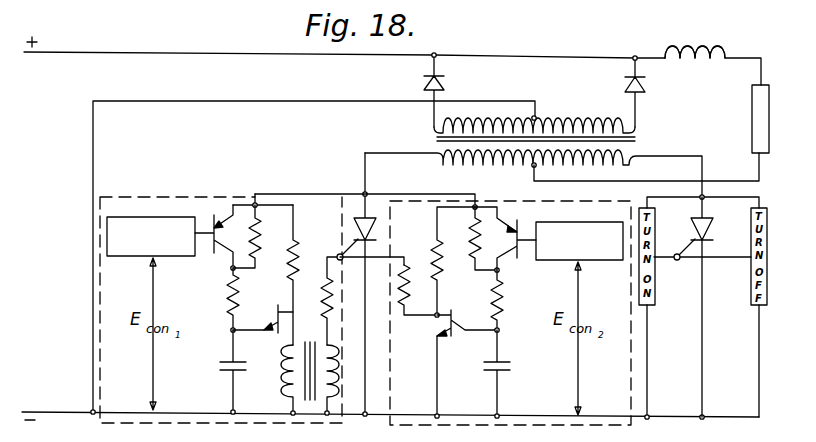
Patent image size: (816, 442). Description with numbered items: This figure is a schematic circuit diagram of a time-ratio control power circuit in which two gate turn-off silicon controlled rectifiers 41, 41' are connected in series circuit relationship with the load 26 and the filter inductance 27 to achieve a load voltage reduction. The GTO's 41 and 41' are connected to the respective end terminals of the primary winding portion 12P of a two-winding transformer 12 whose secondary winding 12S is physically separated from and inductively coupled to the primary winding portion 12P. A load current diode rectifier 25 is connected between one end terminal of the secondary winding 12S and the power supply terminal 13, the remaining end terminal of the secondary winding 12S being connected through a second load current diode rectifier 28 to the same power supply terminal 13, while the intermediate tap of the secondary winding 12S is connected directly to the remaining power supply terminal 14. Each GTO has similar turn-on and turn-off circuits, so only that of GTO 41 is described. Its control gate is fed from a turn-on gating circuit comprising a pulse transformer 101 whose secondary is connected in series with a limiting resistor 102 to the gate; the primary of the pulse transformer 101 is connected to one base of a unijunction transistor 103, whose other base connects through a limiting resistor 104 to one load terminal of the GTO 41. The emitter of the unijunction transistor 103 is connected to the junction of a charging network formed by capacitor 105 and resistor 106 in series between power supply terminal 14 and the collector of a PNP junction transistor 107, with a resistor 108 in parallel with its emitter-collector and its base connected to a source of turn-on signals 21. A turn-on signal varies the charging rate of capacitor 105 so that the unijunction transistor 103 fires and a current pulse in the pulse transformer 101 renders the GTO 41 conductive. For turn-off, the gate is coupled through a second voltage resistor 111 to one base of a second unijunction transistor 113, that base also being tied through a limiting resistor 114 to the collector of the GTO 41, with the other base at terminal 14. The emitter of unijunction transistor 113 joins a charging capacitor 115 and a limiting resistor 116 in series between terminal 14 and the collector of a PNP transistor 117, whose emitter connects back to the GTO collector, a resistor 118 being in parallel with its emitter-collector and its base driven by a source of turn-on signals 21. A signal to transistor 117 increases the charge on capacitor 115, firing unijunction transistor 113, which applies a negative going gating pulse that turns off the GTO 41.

The power supply terminal 13 is at (125, 52).
The remaining power supply terminal 14 is at (62, 415).
The two-winding transformer 12 is at (664, 144).
The secondary winding 12S is at (554, 121).
The primary winding portion 12P is at (512, 163).
The load current diode rectifier 25 is at (624, 85).
The second load current diode rectifier 28 is at (446, 83).
The filter inductance 27 is at (694, 68).
The load 26 is at (752, 113).
The source of turn-on signals 21 is at (152, 218).
The gate turn-off silicon controlled rectifier 41 is at (356, 229).
The gate turn-off silicon controlled rectifier 41' is at (708, 307).
The pulse transformer 101 is at (310, 338).
The limiting resistor 102 is at (324, 294).
The unijunction transistor 103 is at (276, 314).
The limiting resistor 104 is at (294, 244).
The capacitor 105 is at (226, 372).
The resistor 106 is at (228, 296).
The PNP junction transistor 107 is at (208, 254).
The resistor 108 is at (257, 262).
The second voltage resistor 111 is at (402, 312).
The second unijunction transistor 113 is at (453, 312).
The limiting resistor 114 is at (433, 250).
The charging capacitor 115 is at (502, 368).
The limiting resistor 116 is at (508, 298).
The PNP transistor 117 is at (519, 228).
The resistor 118 is at (468, 236).